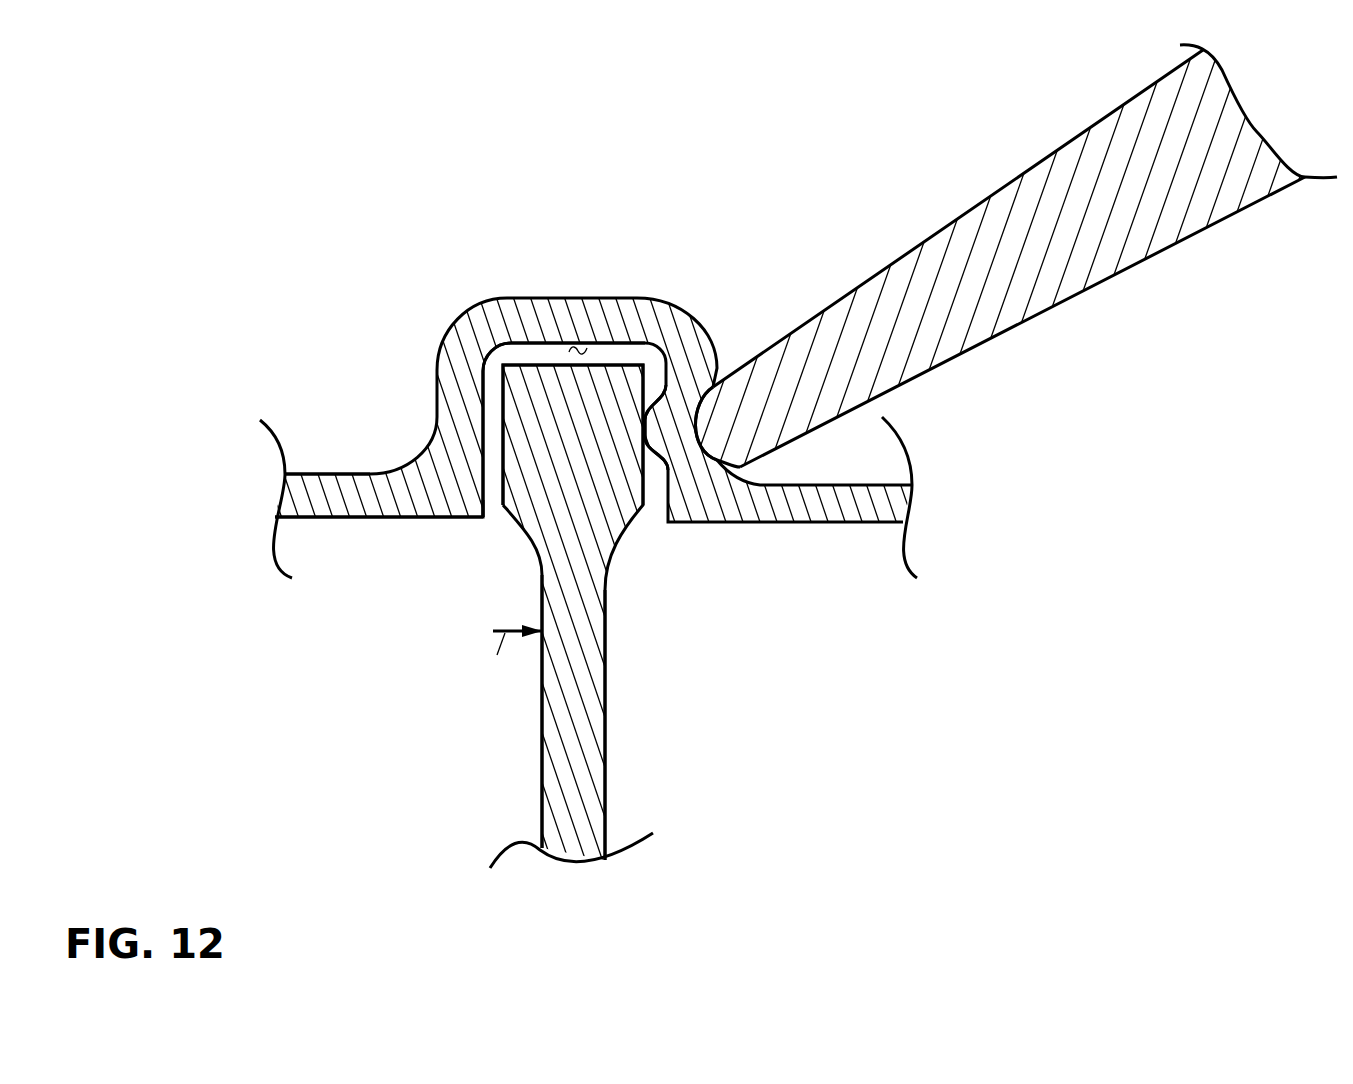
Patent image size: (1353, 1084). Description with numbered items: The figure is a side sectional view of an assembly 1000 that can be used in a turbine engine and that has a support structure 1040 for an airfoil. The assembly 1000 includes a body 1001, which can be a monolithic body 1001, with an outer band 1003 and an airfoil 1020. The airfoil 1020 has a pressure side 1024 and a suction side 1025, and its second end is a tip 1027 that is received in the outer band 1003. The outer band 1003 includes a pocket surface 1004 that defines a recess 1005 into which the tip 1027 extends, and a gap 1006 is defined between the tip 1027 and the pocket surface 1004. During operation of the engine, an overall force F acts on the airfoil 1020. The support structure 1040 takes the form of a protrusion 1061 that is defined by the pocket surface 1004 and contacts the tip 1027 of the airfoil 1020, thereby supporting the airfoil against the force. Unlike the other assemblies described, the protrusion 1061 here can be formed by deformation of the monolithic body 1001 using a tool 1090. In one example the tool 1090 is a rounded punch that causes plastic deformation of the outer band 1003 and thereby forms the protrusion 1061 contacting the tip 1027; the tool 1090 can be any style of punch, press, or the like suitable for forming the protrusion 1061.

The assembly 1000 is at (370, 170).
The body 1001 is at (457, 318).
The outer band 1003 is at (413, 483).
The pocket surface 1004 is at (484, 420).
The recess 1005 is at (493, 513).
The gap 1006 is at (578, 355).
The airfoil 1020 is at (571, 813).
The pressure side 1024 is at (542, 750).
The suction side 1025 is at (607, 752).
The tip 1027 is at (590, 498).
The support structure 1040 is at (680, 415).
The protrusion 1061 is at (646, 420).
The tool 1090 is at (993, 235).